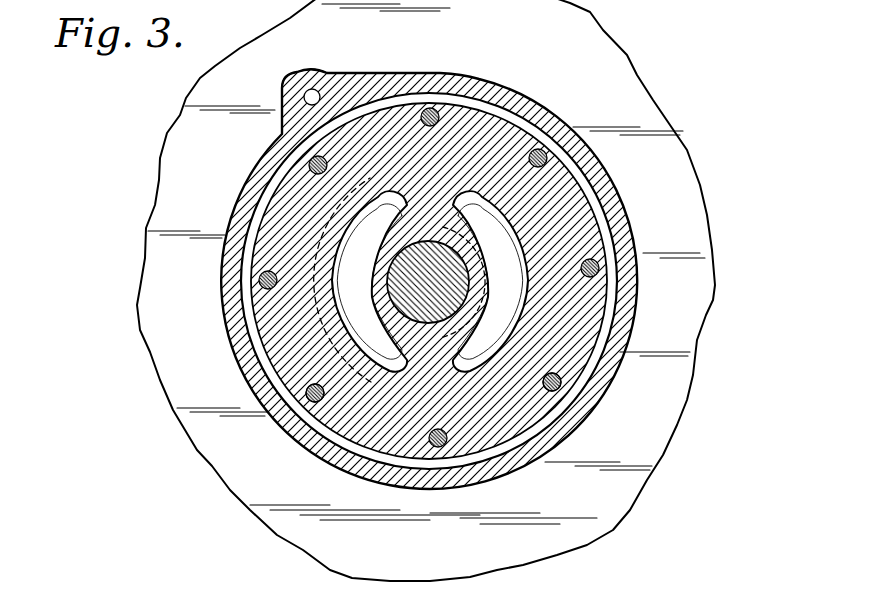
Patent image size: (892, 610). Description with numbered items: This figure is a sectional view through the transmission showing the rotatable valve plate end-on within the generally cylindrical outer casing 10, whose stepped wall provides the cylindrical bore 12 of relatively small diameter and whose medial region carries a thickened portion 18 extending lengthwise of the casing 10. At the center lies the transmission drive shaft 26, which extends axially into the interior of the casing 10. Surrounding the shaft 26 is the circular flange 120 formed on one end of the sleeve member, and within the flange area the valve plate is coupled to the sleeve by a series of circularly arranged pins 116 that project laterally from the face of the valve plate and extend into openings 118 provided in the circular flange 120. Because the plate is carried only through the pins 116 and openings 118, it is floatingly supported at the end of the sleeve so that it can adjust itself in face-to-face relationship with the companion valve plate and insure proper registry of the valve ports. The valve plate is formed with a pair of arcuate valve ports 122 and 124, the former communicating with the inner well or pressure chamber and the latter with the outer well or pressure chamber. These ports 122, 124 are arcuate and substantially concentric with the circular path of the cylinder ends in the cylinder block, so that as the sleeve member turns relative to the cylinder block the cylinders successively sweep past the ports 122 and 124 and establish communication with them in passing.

The outer casing 10 is at (546, 453).
The cylindrical bore 12 is at (590, 157).
The thickened portion 18 is at (290, 80).
The transmission drive shaft 26 is at (450, 305).
The pins 116 is at (541, 156).
The openings 118 is at (306, 402).
The circular flange 120 is at (420, 102).
The arcuate valve port 122 is at (480, 195).
The arcuate valve port 124 is at (387, 196).